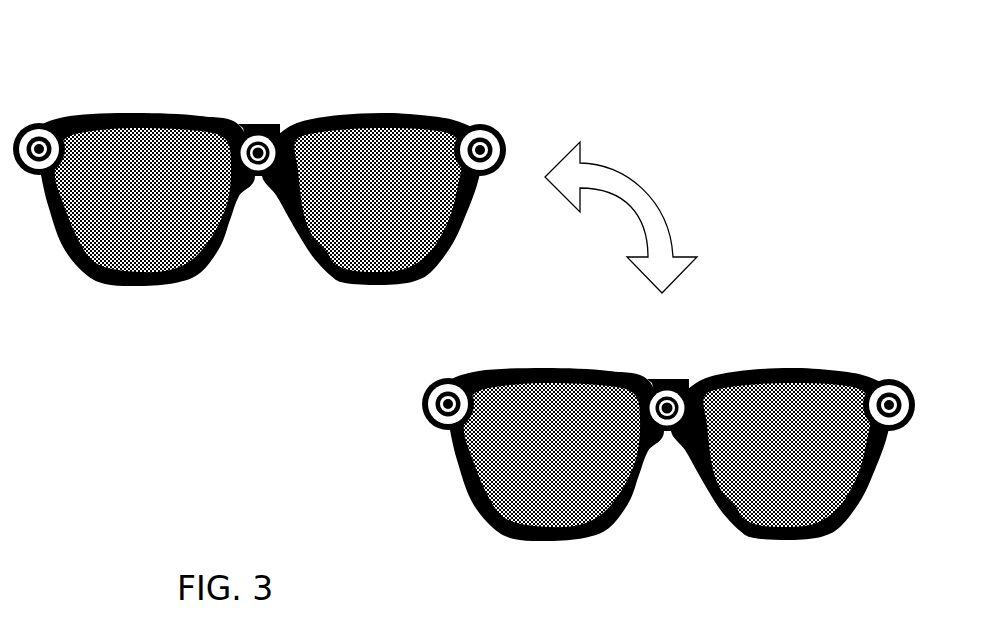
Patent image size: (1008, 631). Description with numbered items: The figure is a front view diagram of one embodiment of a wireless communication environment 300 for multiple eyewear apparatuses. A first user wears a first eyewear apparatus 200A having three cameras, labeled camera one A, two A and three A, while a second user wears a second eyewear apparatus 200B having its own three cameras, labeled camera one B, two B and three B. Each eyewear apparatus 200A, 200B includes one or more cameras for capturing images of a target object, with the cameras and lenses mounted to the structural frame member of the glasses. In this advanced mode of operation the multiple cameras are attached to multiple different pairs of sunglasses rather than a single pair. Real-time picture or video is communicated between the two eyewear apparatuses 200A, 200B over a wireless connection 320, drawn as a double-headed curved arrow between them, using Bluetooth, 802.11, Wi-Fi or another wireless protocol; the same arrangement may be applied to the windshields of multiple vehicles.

The wireless communication environment 300 is at (52, 30).
The first eyewear apparatus 200A is at (107, 118).
The second eyewear apparatus 200B is at (669, 434).
The wireless connection 320 is at (733, 212).